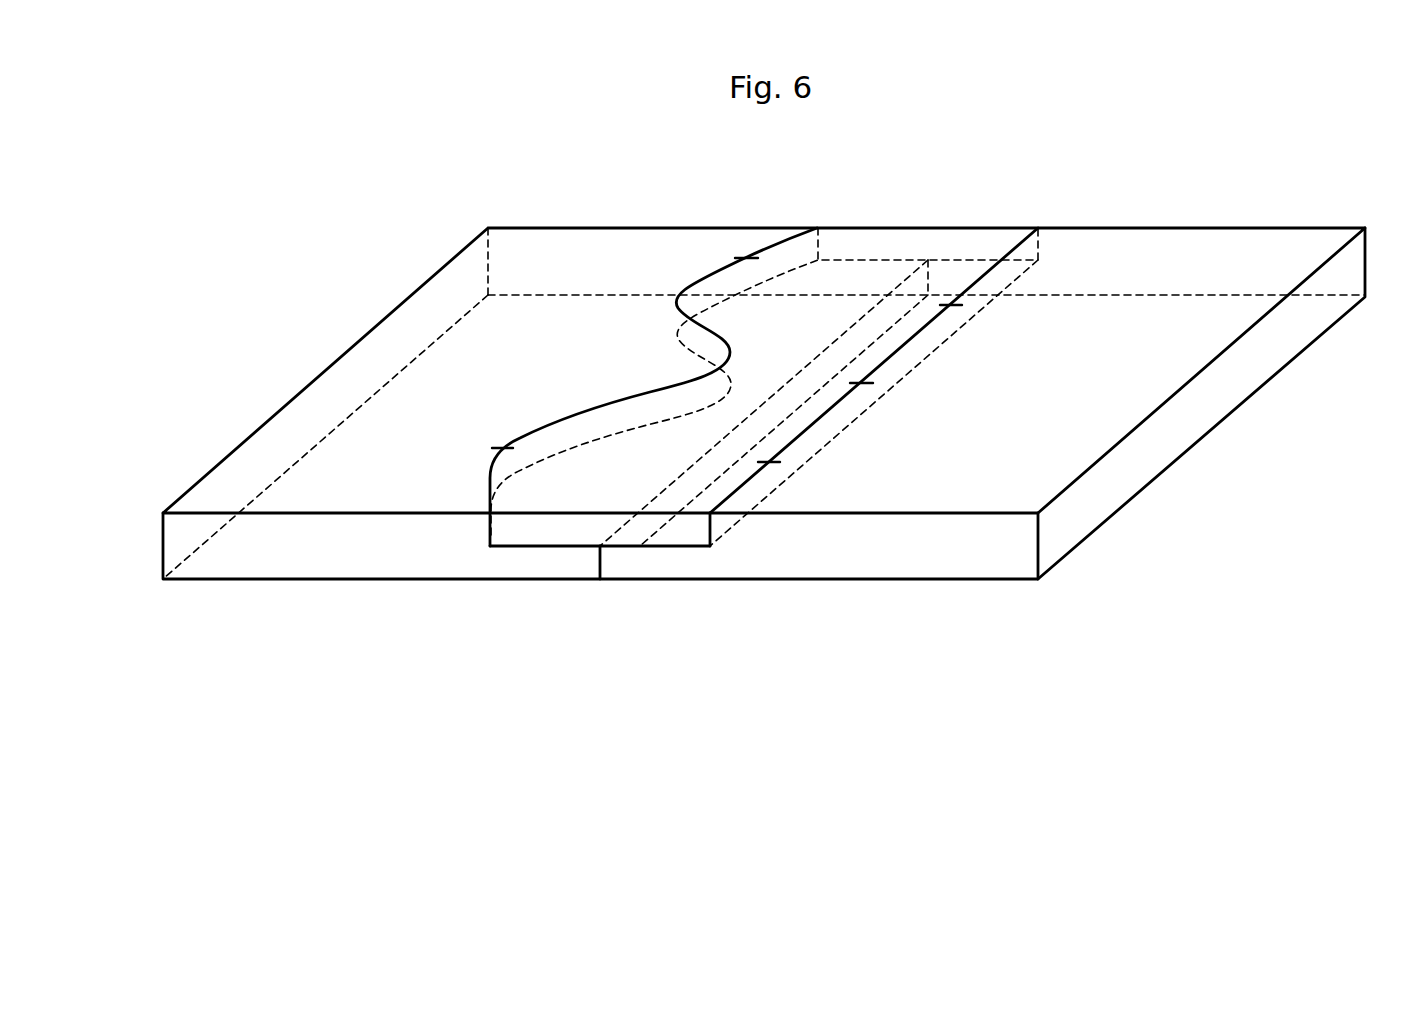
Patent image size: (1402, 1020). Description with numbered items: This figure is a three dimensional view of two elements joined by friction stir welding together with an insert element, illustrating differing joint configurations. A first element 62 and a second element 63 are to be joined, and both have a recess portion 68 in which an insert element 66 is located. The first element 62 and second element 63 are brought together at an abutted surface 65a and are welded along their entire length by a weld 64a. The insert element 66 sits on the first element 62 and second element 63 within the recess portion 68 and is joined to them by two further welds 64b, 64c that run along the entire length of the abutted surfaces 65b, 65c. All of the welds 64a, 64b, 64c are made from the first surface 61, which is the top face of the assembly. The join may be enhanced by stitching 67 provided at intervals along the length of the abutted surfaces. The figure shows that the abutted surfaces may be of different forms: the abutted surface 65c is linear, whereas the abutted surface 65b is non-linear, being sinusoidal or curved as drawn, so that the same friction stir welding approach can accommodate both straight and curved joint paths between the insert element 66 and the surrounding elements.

The first surface 61 is at (492, 176).
The first element 62 is at (337, 562).
The second element 63 is at (1125, 462).
The weld 64a is at (590, 562).
The weld 64b is at (480, 548).
The weld 64c is at (717, 546).
The abutted surface 65a is at (602, 573).
The abutted surface 65b is at (765, 248).
The abutted surface 65c is at (1018, 232).
The insert element 66 is at (860, 245).
The stitching 67 is at (502, 448).
The recess portion 68 is at (522, 546).